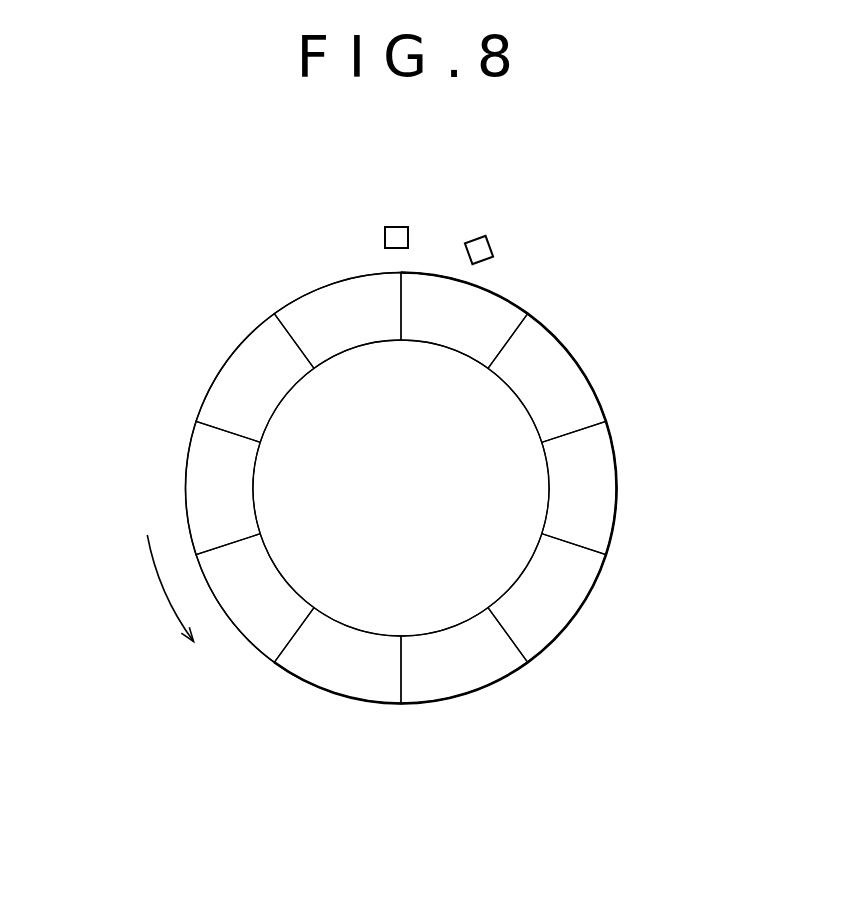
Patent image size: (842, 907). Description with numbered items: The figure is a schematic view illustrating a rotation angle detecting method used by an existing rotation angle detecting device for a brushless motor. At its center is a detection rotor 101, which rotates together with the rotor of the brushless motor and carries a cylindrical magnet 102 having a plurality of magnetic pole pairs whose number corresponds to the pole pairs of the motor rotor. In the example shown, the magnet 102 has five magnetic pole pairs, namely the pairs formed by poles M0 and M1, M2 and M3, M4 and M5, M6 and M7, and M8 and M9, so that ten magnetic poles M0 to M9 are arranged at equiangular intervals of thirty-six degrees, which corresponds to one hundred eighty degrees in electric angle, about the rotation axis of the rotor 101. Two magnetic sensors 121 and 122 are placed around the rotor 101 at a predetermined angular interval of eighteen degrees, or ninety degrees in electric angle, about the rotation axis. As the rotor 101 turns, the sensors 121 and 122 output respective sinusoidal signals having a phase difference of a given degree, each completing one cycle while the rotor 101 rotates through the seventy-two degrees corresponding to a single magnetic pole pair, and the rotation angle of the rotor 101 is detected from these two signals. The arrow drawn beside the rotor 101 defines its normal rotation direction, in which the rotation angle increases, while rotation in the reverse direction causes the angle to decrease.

The detection rotor 101 is at (318, 273).
The cylindrical magnet 102 is at (242, 338).
The magnetic sensor 121 is at (397, 226).
The magnetic sensor 122 is at (484, 240).
The magnetic pole M0 is at (485, 312).
The magnetic pole M1 is at (580, 403).
The magnetic pole M2 is at (598, 515).
The magnetic pole M3 is at (550, 622).
The magnetic pole M4 is at (445, 683).
The magnetic pole M5 is at (353, 683).
The magnetic pole M6 is at (252, 622).
The magnetic pole M7 is at (210, 465).
The magnetic pole M8 is at (222, 403).
The magnetic pole M9 is at (297, 313).